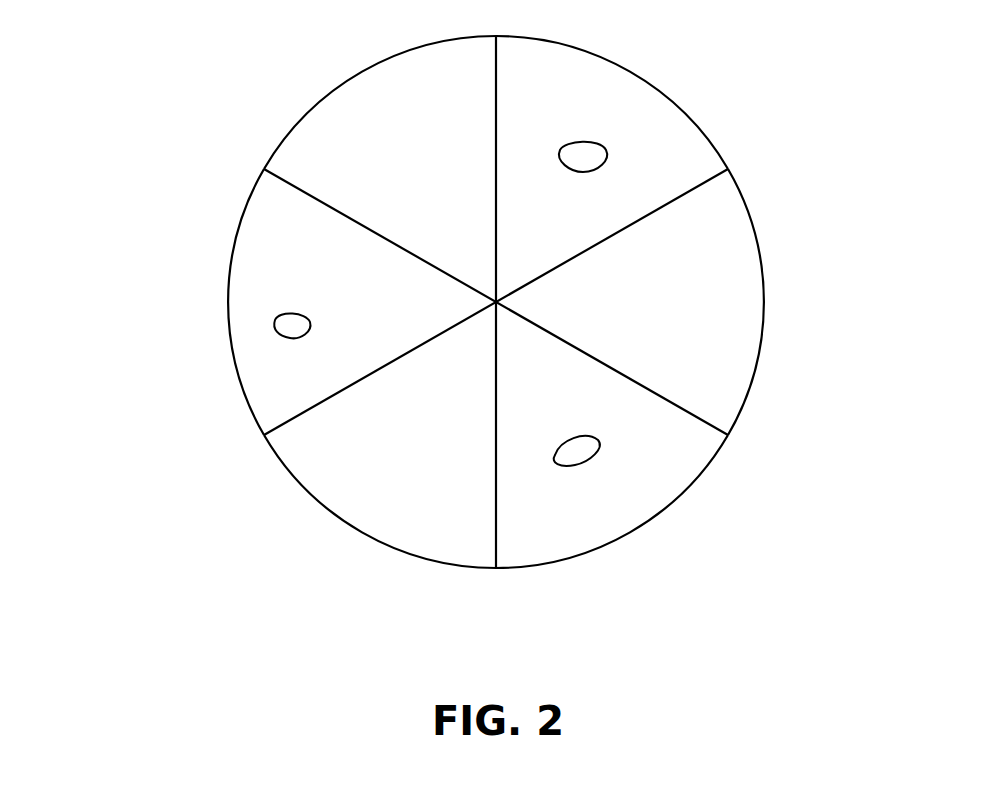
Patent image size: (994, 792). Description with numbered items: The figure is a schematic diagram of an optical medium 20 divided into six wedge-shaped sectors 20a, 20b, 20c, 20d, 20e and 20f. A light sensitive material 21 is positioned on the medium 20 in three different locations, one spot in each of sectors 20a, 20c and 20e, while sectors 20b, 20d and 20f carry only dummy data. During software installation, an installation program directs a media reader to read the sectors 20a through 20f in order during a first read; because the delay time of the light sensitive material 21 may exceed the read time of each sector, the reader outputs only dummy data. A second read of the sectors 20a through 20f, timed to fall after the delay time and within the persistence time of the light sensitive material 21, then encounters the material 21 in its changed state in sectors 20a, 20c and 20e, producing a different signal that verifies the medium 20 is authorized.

The optical medium 20 is at (173, 107).
The sector 20a is at (610, 88).
The sector 20b is at (740, 295).
The sector 20c is at (625, 518).
The sector 20d is at (378, 512).
The sector 20e is at (240, 312).
The sector 20f is at (362, 101).
The light sensitive material 21 is at (585, 160).